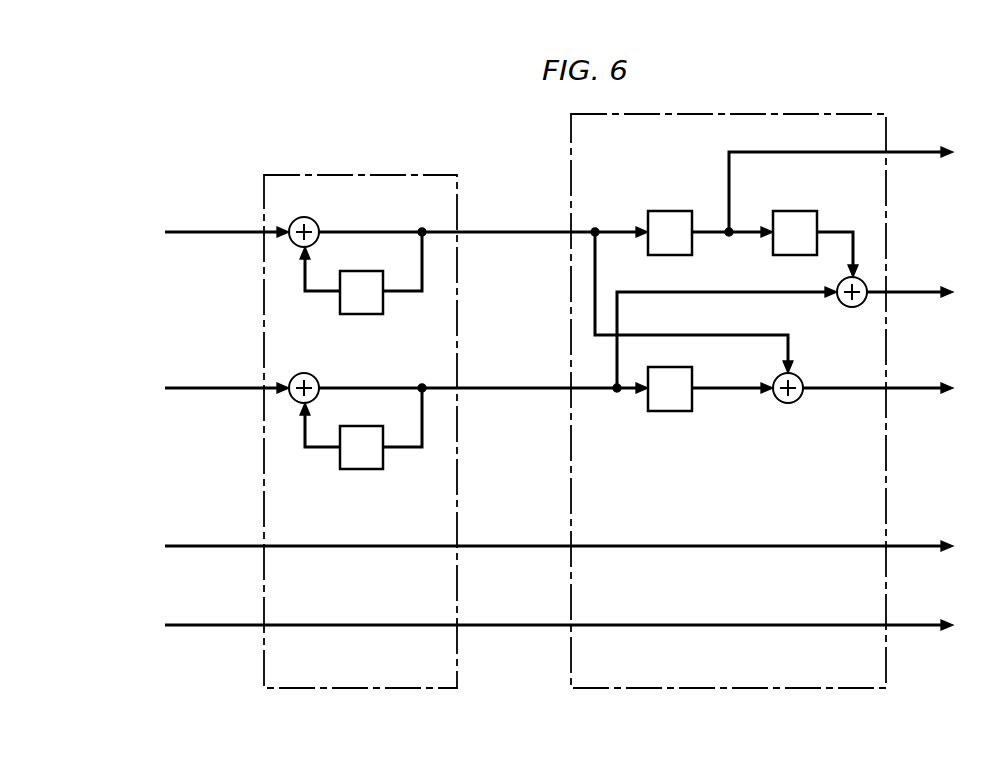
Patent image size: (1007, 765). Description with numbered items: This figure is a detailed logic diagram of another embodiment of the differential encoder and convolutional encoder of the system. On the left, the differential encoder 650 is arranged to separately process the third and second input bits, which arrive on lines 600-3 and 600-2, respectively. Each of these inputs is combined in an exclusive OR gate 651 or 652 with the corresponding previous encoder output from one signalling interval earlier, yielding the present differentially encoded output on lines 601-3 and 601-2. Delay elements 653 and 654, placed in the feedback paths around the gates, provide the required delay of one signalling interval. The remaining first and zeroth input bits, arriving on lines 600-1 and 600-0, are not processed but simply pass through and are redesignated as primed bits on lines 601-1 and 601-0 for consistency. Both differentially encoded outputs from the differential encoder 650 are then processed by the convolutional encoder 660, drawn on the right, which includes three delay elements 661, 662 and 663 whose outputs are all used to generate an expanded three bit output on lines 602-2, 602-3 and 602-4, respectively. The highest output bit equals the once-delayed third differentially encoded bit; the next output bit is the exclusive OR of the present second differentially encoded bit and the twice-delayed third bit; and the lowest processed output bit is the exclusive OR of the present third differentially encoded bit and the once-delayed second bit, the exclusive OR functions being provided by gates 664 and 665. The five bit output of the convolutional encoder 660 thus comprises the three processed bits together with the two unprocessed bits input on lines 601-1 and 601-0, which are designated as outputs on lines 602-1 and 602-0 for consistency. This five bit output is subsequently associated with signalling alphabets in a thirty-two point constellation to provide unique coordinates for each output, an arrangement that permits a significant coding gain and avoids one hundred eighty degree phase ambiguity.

The input line 600-3 is at (229, 230).
The input line 600-2 is at (227, 387).
The input line 600-1 is at (226, 546).
The input line 600-0 is at (226, 624).
The differentially encoded output line 601-3 is at (519, 234).
The differentially encoded output line 601-2 is at (519, 390).
The unprocessed bit line 601-1 is at (474, 548).
The unprocessed bit line 601-0 is at (575, 609).
The output line 602-4 is at (923, 150).
The output line 602-3 is at (923, 290).
The output line 602-2 is at (923, 386).
The output line 602-1 is at (917, 543).
The output line 602-0 is at (918, 622).
The differential encoder 650 is at (394, 175).
The exclusive OR gate 651 is at (313, 223).
The exclusive OR gate 652 is at (313, 377).
The delay element 653 is at (348, 271).
The delay element 654 is at (348, 425).
The convolutional encoder 660 is at (810, 114).
The delay element 661 is at (655, 211).
The delay element 662 is at (780, 211).
The delay element 663 is at (653, 370).
The exclusive OR gate 664 is at (853, 307).
The exclusive OR gate 665 is at (789, 403).